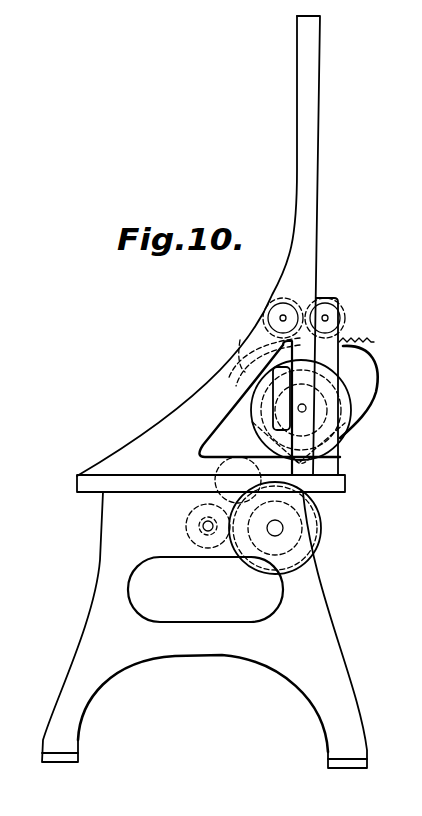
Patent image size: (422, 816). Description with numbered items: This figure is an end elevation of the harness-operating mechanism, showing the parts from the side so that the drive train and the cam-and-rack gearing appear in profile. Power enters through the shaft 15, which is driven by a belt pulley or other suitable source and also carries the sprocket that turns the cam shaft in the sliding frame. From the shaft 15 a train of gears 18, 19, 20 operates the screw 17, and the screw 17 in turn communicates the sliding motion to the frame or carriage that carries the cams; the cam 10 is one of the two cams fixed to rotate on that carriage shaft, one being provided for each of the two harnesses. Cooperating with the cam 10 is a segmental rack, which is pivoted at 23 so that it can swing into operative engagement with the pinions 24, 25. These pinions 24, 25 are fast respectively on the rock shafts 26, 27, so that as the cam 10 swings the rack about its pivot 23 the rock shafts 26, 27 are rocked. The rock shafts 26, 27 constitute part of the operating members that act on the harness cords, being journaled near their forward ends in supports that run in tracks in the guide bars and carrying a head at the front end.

The cam 10 is at (377, 400).
The shaft 15 is at (283, 531).
The screw 17 is at (190, 520).
The gear 18 is at (190, 531).
The gear 19 is at (215, 463).
The gear 20 is at (319, 515).
The pivot 23 is at (312, 470).
The pinion 24 is at (346, 325).
The pinion 25 is at (269, 302).
The rock shaft 26 is at (328, 316).
The rock shaft 27 is at (266, 320).